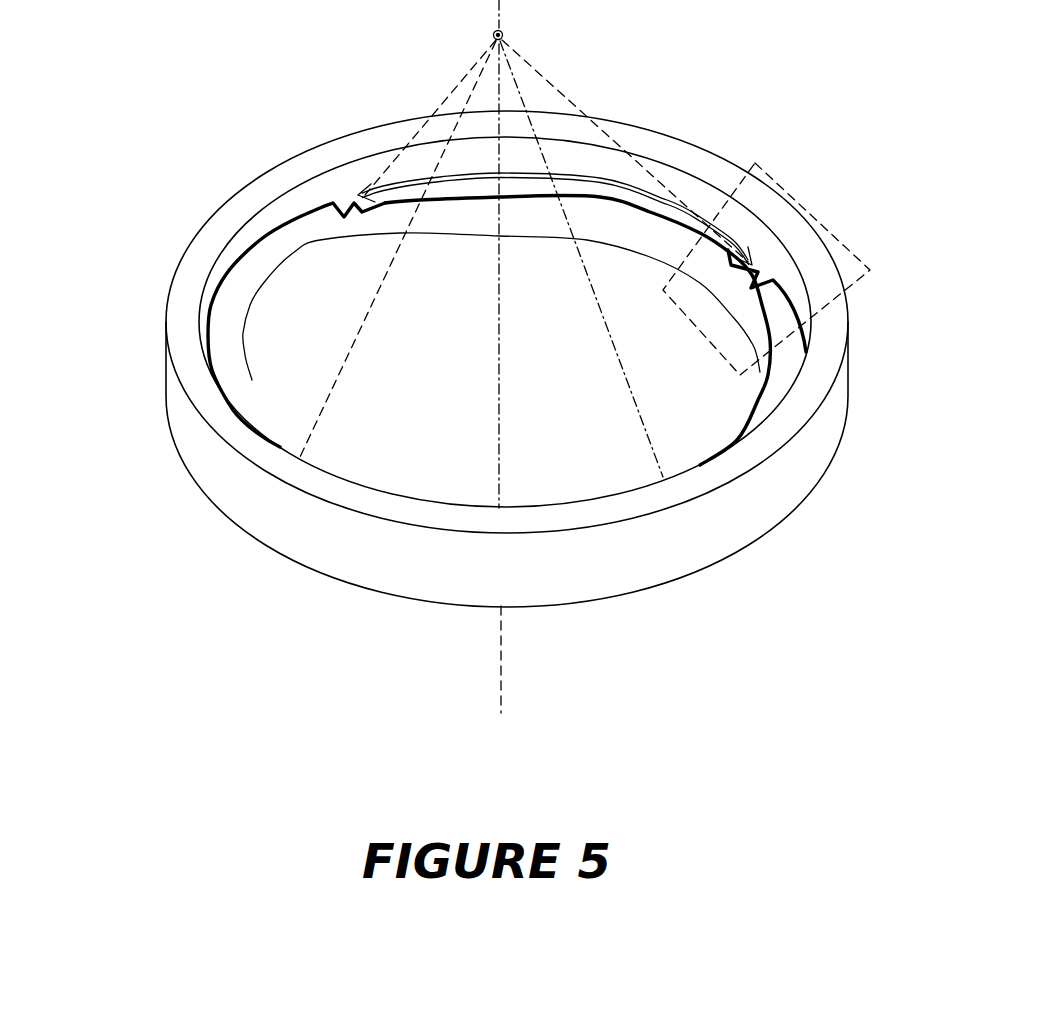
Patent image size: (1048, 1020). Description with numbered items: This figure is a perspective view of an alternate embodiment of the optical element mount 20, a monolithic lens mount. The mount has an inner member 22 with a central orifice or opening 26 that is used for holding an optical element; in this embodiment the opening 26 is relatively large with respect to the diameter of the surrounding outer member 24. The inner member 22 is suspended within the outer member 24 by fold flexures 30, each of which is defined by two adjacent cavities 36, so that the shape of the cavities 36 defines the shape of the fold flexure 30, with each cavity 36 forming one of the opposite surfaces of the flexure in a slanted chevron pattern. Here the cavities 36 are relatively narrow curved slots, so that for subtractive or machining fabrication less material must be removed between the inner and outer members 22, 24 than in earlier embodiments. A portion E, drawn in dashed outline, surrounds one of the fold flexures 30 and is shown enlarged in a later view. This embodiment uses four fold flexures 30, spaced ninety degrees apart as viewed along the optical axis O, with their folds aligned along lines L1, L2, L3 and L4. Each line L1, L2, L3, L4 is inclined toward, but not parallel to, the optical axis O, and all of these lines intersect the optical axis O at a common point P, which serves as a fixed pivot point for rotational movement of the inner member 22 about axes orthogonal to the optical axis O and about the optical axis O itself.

The optical element mount 20 is at (1043, 207).
The inner member 22 is at (280, 250).
The outer member 24 is at (833, 428).
The opening 26 is at (637, 441).
The fold flexure 30 is at (750, 262).
The cavities 36 is at (223, 290).
The portion E is at (862, 283).
The common point P is at (505, 32).
The line L1 is at (567, 93).
The line L2 is at (443, 93).
The line L3 is at (356, 322).
The line L4 is at (610, 336).
The optical axis O is at (502, 653).